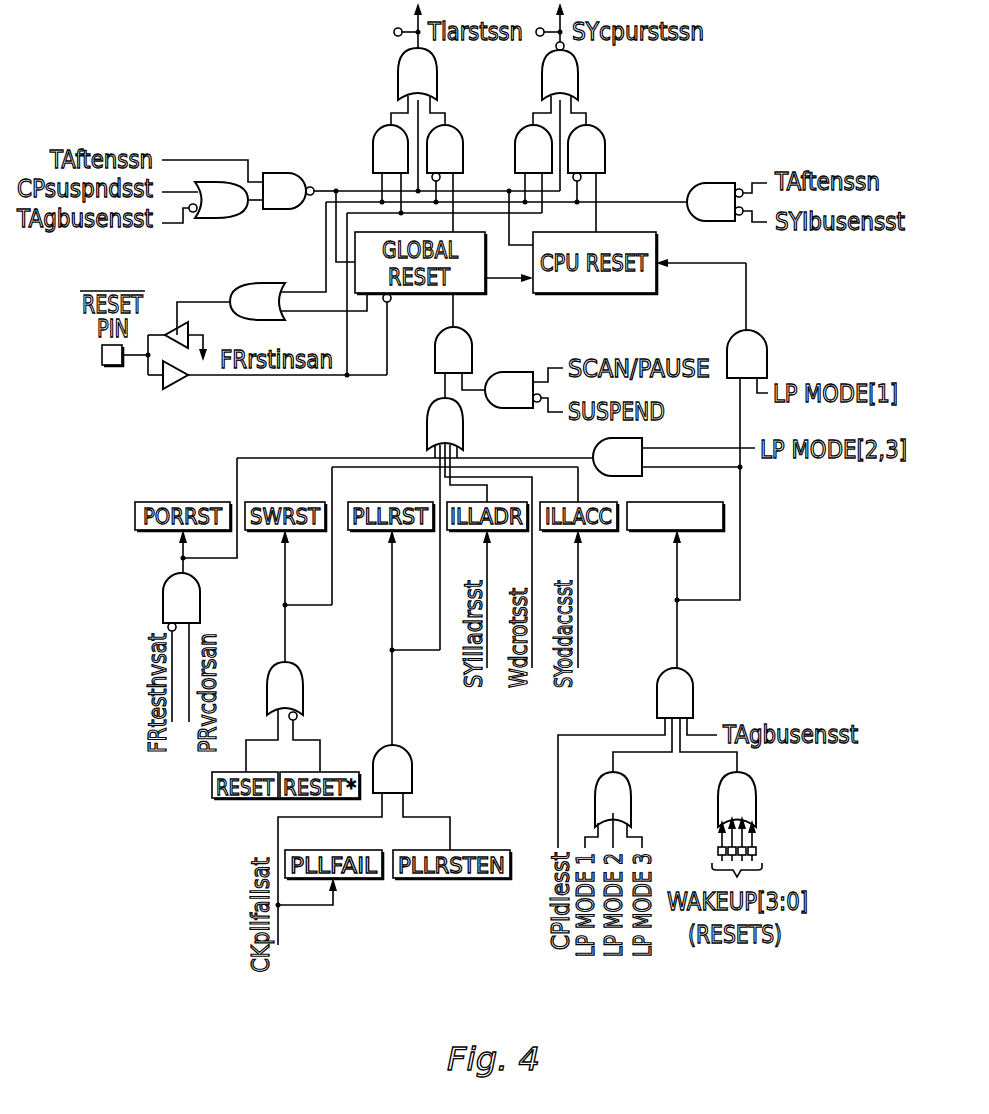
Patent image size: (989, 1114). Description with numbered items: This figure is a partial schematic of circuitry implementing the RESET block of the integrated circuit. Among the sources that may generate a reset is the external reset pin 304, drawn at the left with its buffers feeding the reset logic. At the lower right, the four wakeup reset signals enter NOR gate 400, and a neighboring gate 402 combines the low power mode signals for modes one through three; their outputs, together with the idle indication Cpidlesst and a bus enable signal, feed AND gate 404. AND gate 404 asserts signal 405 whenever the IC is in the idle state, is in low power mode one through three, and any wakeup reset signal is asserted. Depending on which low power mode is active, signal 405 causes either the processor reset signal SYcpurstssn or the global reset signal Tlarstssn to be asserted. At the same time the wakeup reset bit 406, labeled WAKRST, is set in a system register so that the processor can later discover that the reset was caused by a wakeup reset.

The external reset pin 304 is at (112, 367).
The NOR gate 400 is at (757, 812).
The OR gate for low power modes 402 is at (631, 792).
The AND gate 404 is at (694, 694).
The signal 405 is at (741, 531).
The wakeup reset bit 406 is at (645, 532).